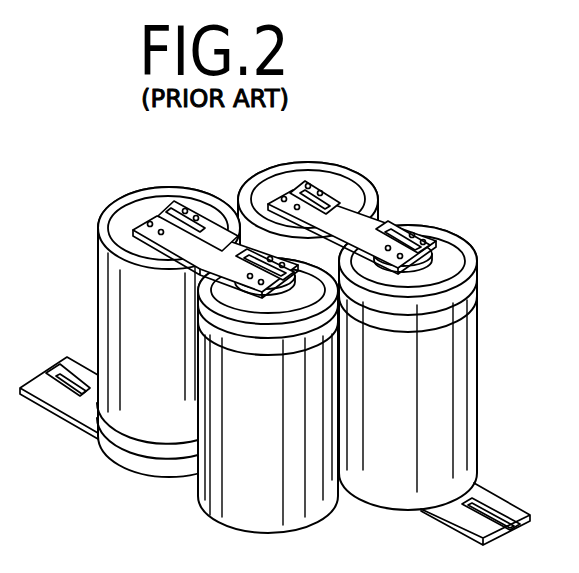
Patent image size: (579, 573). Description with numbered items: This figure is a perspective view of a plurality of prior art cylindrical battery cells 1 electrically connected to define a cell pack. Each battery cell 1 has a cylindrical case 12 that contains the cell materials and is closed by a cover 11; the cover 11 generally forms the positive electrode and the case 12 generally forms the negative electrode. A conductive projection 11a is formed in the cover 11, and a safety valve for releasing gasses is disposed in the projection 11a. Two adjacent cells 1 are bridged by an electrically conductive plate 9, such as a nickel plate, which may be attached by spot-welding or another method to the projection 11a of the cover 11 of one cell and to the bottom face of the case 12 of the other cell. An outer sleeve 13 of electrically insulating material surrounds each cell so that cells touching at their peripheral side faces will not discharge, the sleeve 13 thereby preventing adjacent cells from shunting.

The battery cell 1 is at (344, 156).
The electrically conductive plate 9 is at (208, 230).
The cover 11 is at (136, 213).
The conductive projection 11a is at (437, 270).
The case 12 is at (452, 300).
The outer sleeve 13 is at (450, 433).